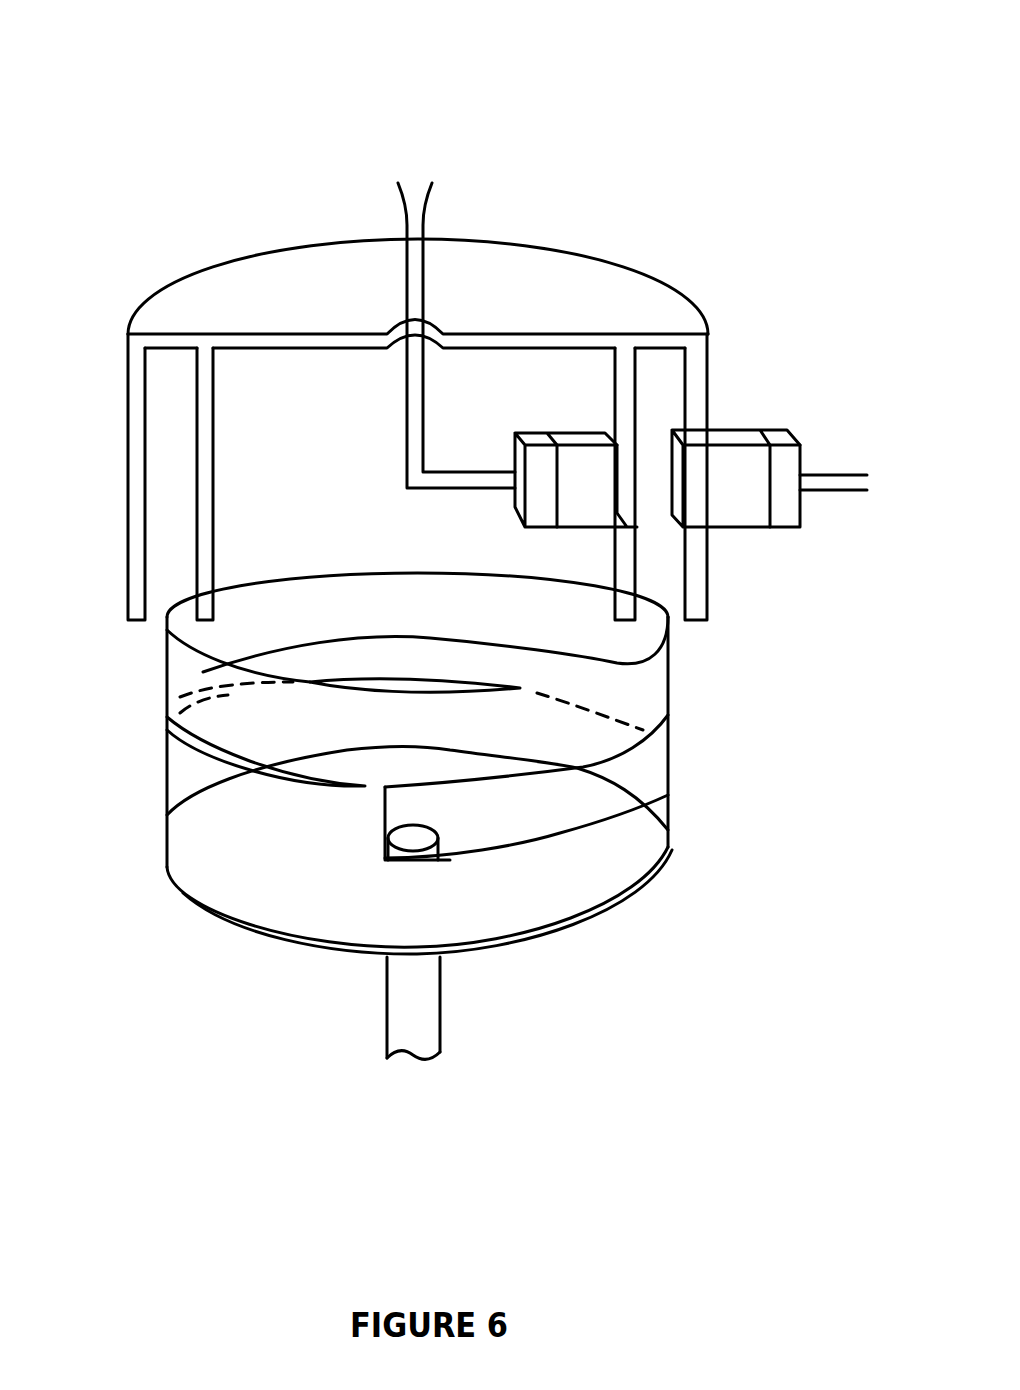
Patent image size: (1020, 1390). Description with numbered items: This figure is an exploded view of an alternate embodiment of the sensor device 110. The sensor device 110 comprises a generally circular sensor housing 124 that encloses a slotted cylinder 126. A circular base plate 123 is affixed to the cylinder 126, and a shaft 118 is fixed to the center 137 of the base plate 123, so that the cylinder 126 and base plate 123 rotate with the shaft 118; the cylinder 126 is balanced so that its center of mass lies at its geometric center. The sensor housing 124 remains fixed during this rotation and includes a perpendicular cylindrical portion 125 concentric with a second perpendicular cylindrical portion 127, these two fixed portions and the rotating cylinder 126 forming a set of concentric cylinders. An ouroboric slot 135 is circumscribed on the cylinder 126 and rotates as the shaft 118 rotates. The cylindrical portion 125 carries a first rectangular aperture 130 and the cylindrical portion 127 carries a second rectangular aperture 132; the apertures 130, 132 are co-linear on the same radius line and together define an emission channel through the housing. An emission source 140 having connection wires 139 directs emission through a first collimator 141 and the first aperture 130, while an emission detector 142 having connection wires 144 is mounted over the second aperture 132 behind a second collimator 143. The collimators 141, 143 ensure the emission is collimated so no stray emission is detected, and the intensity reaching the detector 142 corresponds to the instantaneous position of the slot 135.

The sensor device 110 is at (582, 118).
The shaft 118 is at (437, 1013).
The circular base plate 123 is at (337, 953).
The sensor housing 124 is at (300, 253).
The perpendicular cylindrical portion 125 is at (203, 403).
The slotted cylinder 126 is at (668, 828).
The second perpendicular cylindrical portion 127 is at (137, 402).
The first rectangular aperture 130 is at (625, 440).
The second rectangular aperture 132 is at (710, 430).
The ouroboric slot 135 is at (353, 643).
The center of base plate 137 is at (432, 835).
The connection wires 139 is at (429, 156).
The emission source 140 is at (540, 522).
The first collimator 141 is at (582, 522).
The emission detector 142 is at (790, 515).
The second collimator 143 is at (735, 520).
The connection wires 144 is at (871, 470).